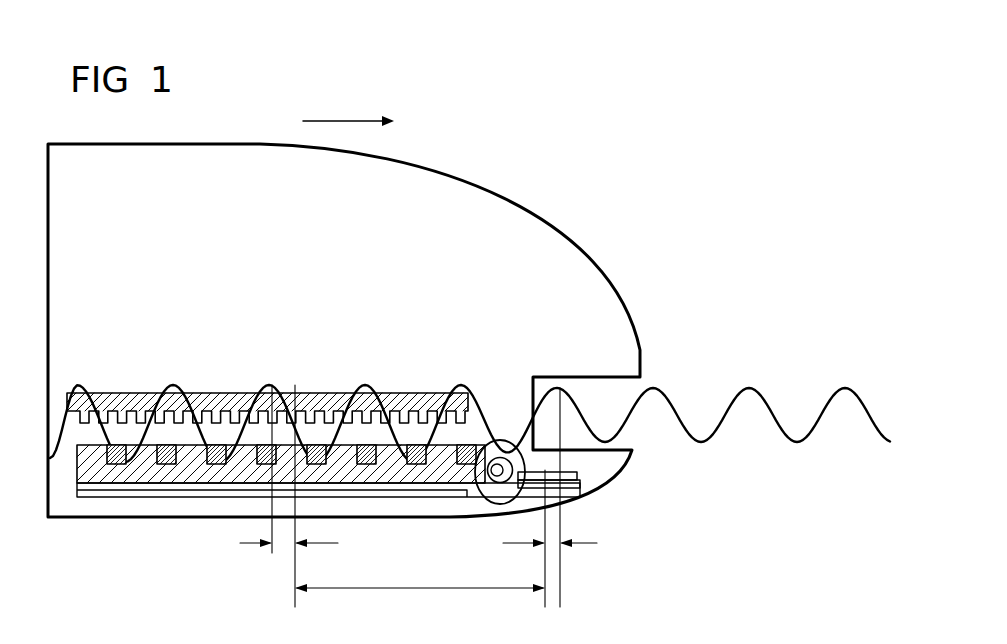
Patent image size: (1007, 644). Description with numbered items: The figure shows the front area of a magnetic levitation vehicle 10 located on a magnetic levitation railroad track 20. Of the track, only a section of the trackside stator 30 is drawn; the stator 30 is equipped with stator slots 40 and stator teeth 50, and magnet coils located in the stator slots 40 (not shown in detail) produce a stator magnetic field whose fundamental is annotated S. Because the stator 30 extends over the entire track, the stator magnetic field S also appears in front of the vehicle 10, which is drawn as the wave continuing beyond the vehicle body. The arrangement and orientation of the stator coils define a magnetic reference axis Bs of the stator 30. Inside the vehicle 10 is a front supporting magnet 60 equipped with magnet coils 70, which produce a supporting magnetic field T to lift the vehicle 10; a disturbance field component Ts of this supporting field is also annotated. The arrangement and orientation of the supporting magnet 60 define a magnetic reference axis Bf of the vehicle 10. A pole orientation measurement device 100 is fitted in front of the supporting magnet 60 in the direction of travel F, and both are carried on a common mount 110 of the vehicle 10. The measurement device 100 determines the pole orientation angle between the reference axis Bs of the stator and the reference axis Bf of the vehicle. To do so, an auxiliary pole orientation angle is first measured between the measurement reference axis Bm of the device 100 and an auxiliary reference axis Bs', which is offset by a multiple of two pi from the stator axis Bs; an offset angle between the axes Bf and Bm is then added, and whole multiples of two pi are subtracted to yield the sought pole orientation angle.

The magnetic levitation vehicle 10 is at (592, 259).
The magnetic levitation railroad track 20 is at (426, 389).
The trackside stator 30 is at (321, 393).
The stator slots 40 is at (66, 431).
The stator teeth 50 is at (78, 425).
The supporting magnet 60 is at (82, 470).
The magnet coils 70 is at (112, 462).
The pole orientation measurement device 100 is at (577, 470).
The mount 110 is at (587, 487).
The fundamental of the stator magnetic field S is at (172, 386).
The disturbance field component of the supporting magnetic field Ts is at (498, 389).
The supporting magnet field T is at (198, 445).
The direction of travel F is at (348, 110).
The magnetic reference axis of the stator Bs is at (235, 571).
The auxiliary reference axis Bs' is at (600, 523).
The magnetic reference axis of the magnetic levitation vehicle Bf is at (295, 598).
The magnetic reference axis of the pole orientation measurement device Bm is at (545, 598).